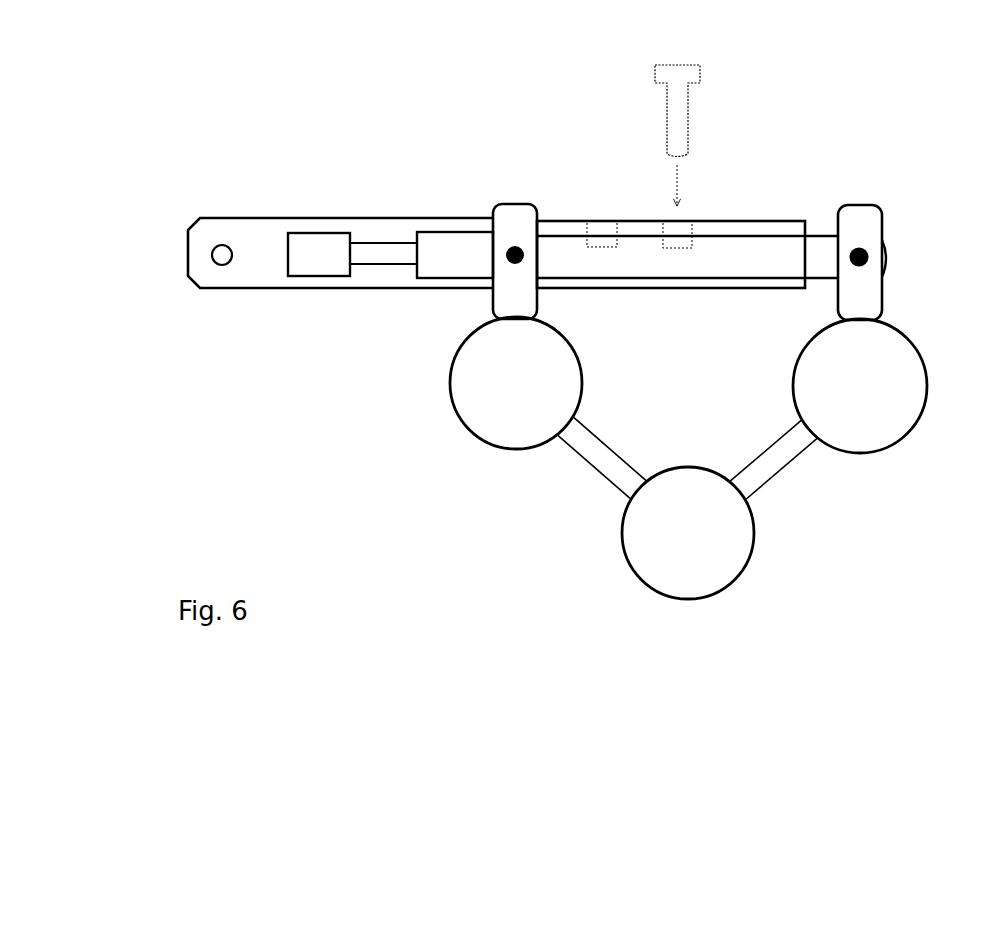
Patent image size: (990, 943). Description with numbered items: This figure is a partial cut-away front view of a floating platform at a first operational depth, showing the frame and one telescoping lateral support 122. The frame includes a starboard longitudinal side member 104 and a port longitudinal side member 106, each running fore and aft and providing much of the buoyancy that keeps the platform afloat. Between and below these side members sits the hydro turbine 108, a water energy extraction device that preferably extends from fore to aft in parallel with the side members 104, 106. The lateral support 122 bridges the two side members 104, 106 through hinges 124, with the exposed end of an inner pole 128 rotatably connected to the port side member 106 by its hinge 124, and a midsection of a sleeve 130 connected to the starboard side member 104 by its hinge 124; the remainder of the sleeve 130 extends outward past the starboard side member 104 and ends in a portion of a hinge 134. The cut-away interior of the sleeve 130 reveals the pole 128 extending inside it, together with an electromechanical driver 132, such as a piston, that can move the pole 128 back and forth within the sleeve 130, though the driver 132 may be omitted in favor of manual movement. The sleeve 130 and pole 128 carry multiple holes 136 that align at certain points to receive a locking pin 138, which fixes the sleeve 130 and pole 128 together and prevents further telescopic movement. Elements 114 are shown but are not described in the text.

The starboard longitudinal side member 104 is at (481, 450).
The port longitudinal side member 106 is at (883, 470).
The hydro turbine 108 is at (643, 602).
The connecting rod 114 is at (595, 494).
The lateral support 122 is at (383, 202).
The hinge 124 is at (484, 203).
The inner pole 128 is at (826, 246).
The sleeve 130 is at (424, 286).
The electromechanical driver 132 is at (316, 268).
The hinge 134 is at (200, 238).
The holes 136 is at (609, 213).
The locking pin 138 is at (644, 111).